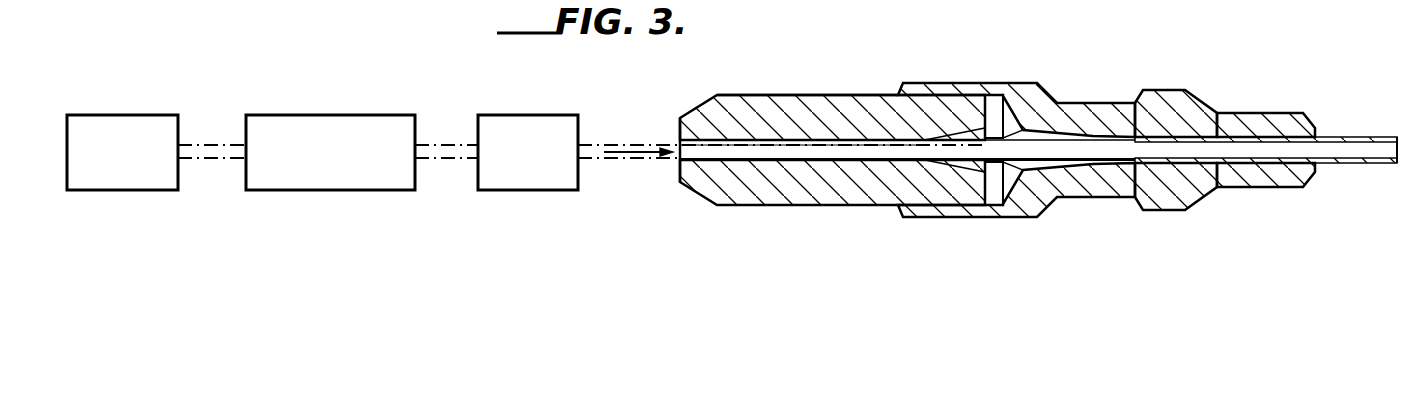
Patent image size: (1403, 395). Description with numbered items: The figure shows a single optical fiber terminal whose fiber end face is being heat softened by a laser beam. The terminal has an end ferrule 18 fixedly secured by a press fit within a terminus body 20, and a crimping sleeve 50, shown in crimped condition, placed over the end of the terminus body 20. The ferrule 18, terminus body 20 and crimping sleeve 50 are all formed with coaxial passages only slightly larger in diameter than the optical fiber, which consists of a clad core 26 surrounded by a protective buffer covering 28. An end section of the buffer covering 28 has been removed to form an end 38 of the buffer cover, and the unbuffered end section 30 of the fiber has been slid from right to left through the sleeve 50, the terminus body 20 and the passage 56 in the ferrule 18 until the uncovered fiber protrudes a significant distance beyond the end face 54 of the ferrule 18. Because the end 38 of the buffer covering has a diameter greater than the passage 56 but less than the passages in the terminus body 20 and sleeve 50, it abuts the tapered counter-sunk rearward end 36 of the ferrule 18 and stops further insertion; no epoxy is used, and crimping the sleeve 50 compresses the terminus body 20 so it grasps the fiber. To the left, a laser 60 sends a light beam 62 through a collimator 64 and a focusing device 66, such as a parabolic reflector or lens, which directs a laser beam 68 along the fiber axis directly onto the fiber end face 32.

The end ferrule 18 is at (861, 101).
The terminus body 20 is at (1093, 104).
The clad core 26 is at (1255, 148).
The buffer covering 28 is at (1349, 137).
The end section 30 is at (762, 160).
The end face 32 is at (680, 152).
The counter-sunk rearward end 36 is at (975, 132).
The end of the buffer covering 38 is at (925, 171).
The crimping sleeve 50 is at (1185, 91).
The end face of the ferrule 54 is at (680, 122).
The passage 56 is at (803, 142).
The laser 60 is at (130, 115).
The light beam 62 is at (227, 143).
The collimator 64 is at (325, 115).
The focusing device 66 is at (535, 115).
The laser beam 68 is at (632, 143).